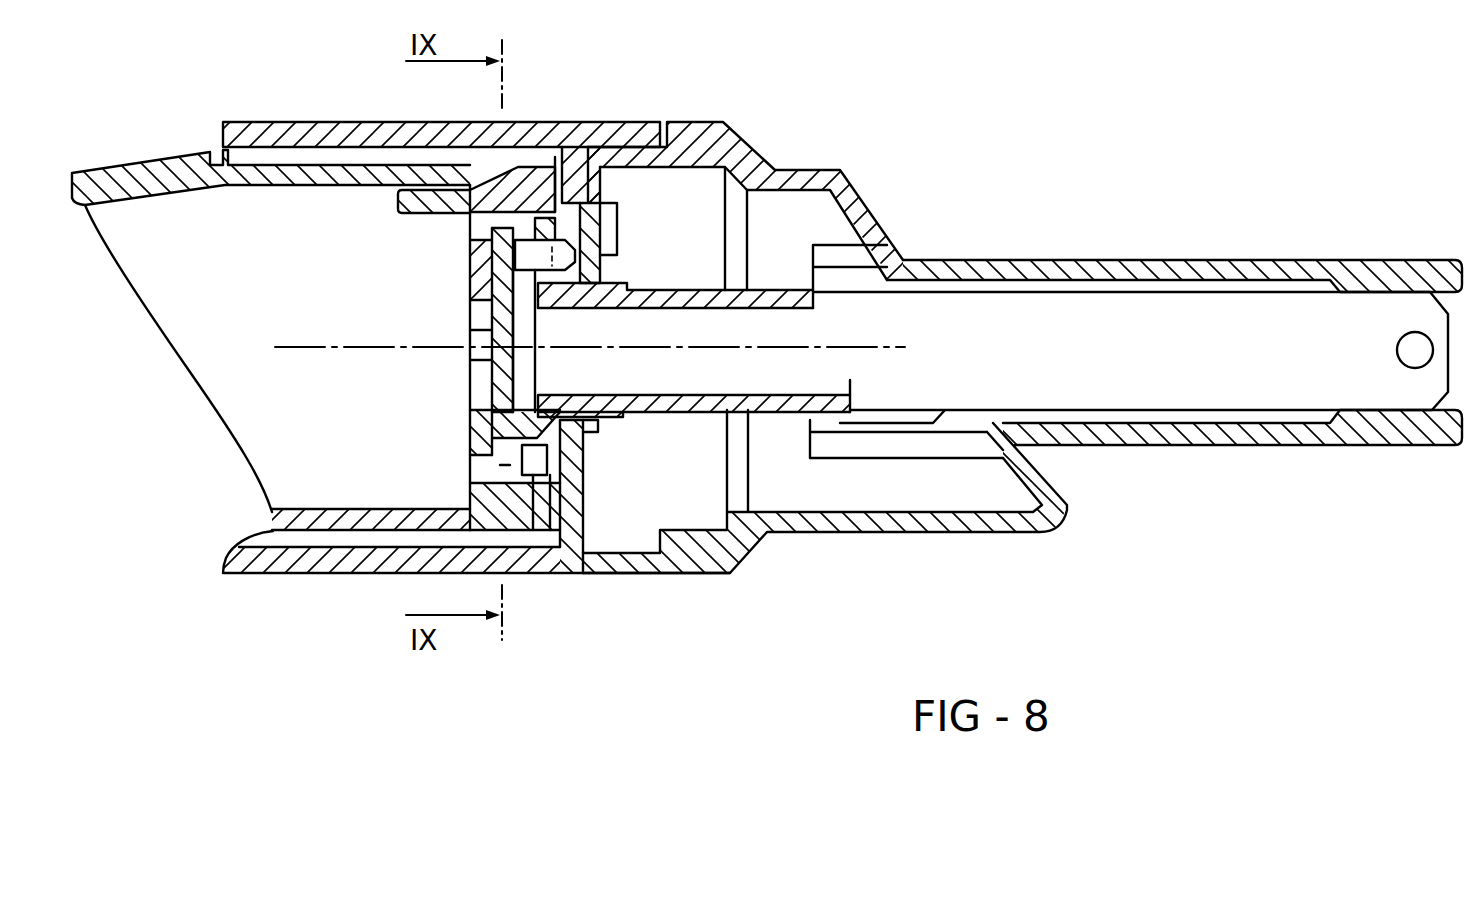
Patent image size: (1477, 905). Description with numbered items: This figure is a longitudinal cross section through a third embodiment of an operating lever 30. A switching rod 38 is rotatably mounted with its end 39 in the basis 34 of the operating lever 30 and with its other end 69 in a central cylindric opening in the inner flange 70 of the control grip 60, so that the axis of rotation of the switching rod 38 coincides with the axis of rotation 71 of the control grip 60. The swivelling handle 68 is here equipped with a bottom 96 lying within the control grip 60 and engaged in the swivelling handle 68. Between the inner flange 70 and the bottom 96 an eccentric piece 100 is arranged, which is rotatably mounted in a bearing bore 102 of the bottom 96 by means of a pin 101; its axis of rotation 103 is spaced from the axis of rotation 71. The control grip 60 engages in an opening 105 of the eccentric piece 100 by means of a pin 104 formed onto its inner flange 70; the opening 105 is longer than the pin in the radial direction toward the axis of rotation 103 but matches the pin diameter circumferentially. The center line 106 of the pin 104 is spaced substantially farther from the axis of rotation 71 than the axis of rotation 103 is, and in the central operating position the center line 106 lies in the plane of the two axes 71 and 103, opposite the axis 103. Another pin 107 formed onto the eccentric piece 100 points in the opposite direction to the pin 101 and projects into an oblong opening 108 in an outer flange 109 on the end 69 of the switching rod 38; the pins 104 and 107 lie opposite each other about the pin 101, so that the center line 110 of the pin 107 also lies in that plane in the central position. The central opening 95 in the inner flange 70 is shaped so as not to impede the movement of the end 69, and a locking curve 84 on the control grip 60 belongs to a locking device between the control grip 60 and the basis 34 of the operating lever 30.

The operating lever 30 is at (1178, 234).
The basis 34 is at (1260, 266).
The switching rod 38 is at (996, 300).
The end 39 is at (1432, 402).
The control grip 60 is at (243, 563).
The swivelling handle 68 is at (347, 522).
The end 69 is at (598, 418).
The inner flange 70 is at (590, 507).
The axis of rotation 71 is at (290, 347).
The locking curve 84 is at (610, 203).
The central opening 95 is at (570, 405).
The bottom 96 is at (472, 437).
The eccentric piece 100 is at (497, 412).
The pin 101 is at (478, 322).
The bearing bore 102 is at (472, 300).
The axis of rotation 103 is at (452, 316).
The pin 104 is at (530, 510).
The opening 105 is at (533, 505).
The center line 106 is at (590, 462).
The pin 107 is at (603, 267).
The opening 108 is at (570, 245).
The outer flange 109 is at (553, 235).
The center line 110 is at (523, 247).